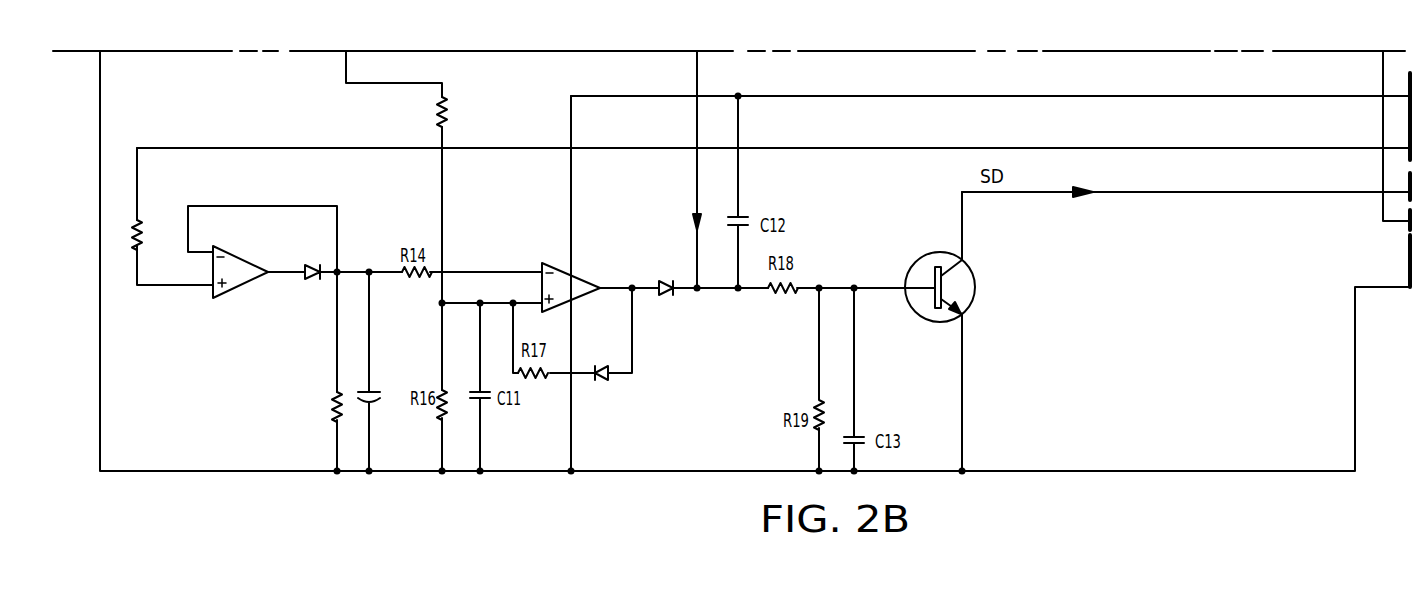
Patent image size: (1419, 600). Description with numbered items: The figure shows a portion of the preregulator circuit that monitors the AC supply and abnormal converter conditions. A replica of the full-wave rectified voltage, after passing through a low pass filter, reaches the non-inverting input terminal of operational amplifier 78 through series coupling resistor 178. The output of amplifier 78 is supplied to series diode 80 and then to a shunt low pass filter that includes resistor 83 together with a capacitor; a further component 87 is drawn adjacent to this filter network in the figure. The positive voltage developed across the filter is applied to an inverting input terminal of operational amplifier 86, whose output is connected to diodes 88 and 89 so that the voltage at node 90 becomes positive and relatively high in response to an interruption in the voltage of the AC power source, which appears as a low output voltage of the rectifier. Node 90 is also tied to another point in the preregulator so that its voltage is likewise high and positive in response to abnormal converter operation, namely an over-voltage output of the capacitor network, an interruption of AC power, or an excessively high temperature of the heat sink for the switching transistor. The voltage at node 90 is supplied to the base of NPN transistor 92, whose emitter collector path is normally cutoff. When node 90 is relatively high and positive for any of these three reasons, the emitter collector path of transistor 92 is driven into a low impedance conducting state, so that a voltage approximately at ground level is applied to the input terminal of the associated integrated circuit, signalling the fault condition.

The series coupling resistor 178 is at (128, 242).
The operational amplifier 78 is at (238, 280).
The series diode 80 is at (305, 265).
The resistor 83 is at (335, 393).
The operational amplifier 86 is at (553, 263).
The capacitor C10 87 is at (382, 399).
The diode 88 is at (604, 377).
The diode 89 is at (665, 289).
The node 90 is at (699, 289).
The NPN transistor 92 is at (933, 265).